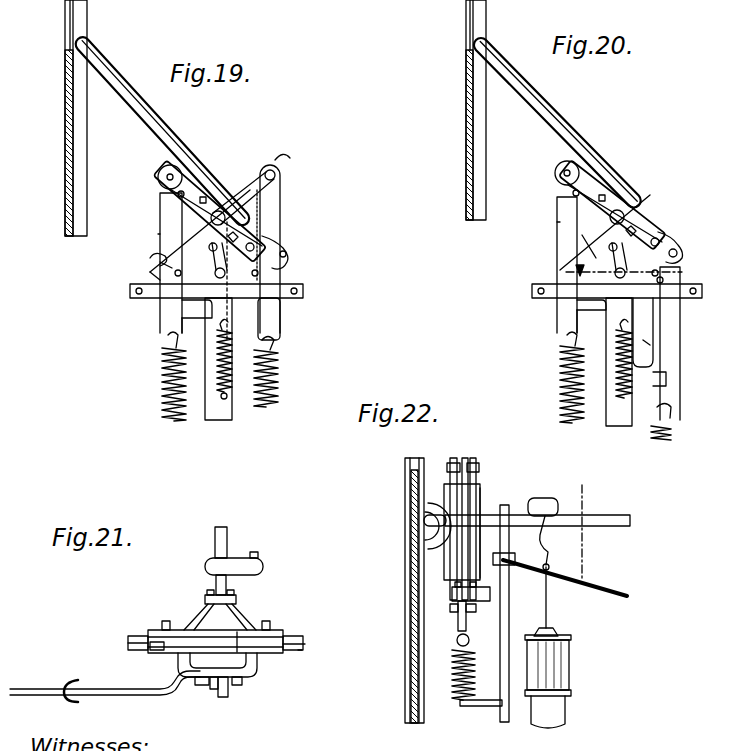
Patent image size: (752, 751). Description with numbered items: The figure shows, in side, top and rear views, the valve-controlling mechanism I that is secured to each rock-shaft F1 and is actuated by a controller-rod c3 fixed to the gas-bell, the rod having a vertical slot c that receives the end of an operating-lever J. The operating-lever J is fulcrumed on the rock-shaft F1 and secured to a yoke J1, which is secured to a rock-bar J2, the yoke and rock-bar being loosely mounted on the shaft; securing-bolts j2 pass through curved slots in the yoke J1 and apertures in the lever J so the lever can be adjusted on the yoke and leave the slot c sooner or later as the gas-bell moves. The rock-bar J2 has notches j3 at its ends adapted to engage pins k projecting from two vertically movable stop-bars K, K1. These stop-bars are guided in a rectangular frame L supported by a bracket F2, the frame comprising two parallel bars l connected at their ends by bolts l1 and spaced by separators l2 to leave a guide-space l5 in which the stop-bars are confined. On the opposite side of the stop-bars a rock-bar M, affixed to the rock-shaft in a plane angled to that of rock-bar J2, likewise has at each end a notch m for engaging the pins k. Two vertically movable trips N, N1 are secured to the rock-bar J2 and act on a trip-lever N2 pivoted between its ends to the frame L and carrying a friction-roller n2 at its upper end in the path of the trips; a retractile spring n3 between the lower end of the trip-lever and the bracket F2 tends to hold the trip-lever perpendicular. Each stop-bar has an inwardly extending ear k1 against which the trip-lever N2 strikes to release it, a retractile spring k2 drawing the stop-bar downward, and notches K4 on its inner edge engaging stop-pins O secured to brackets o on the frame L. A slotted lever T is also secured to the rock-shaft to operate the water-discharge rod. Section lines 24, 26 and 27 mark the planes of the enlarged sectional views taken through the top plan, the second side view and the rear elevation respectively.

In FIG. 19, the vertical slot c is at (65, 12).
In FIG. 20, the vertical slot c is at (464, 110).
In FIG. 19, the controller-rod c3 is at (65, 74).
In FIG. 20, the controller-rod c3 is at (455, 135).
In FIG. 21, the controller-rod c3 is at (76, 682).
In FIG. 22, the controller-rod c3 is at (405, 480).
In FIG. 19, the operating-lever J is at (140, 114).
In FIG. 20, the operating-lever J is at (568, 142).
In FIG. 21, the operating-lever J is at (150, 697).
In FIG. 22, the operating-lever J is at (410, 570).
In FIG. 19, the yoke J1 is at (262, 233).
In FIG. 20, the yoke J1 is at (625, 232).
In FIG. 21, the yoke J1 is at (214, 690).
In FIG. 22, the yoke J1 is at (430, 502).
In FIG. 19, the rock-bar J2 is at (268, 248).
In FIG. 20, the rock-bar J2 is at (630, 215).
In FIG. 21, the rock-bar J2 is at (198, 686).
In FIG. 22, the rock-bar J2 is at (452, 462).
In FIG. 19, the securing-bolts j2 is at (204, 195).
In FIG. 20, the securing-bolts j2 is at (615, 183).
In FIG. 21, the securing-bolts j2 is at (226, 698).
In FIG. 22, the securing-bolts j2 is at (424, 520).
In FIG. 19, the notches j3 is at (290, 258).
In FIG. 20, the notches j3 is at (684, 247).
In FIG. 19, the pins k is at (158, 184).
In FIG. 20, the pins k is at (611, 214).
In FIG. 21, the pins k is at (152, 650).
In FIG. 19, the stop-bar K is at (160, 300).
In FIG. 20, the stop-bar K is at (563, 265).
In FIG. 21, the stop-bar K is at (160, 630).
In FIG. 22, the stop-bar K is at (470, 474).
In FIG. 19, the stop-bar K1 is at (282, 197).
In FIG. 20, the stop-bar K1 is at (651, 343).
In FIG. 21, the stop-bar K1 is at (303, 636).
In FIG. 22, the stop-bar K1 is at (472, 606).
In FIG. 19, the notches K4 is at (150, 272).
In FIG. 20, the notches K4 is at (648, 327).
In FIG. 19, the ear k1 is at (172, 336).
In FIG. 20, the ear k1 is at (640, 358).
In FIG. 19, the retractile spring k2 is at (164, 411).
In FIG. 20, the retractile spring k2 is at (551, 384).
In FIG. 22, the retractile spring k2 is at (460, 704).
In FIG. 19, the rock-bar M is at (250, 176).
In FIG. 21, the rock-bar M is at (198, 626).
In FIG. 22, the rock-bar M is at (480, 484).
In FIG. 19, the notch m is at (280, 160).
In FIG. 19, the rock-shaft F1 is at (219, 210).
In FIG. 20, the rock-shaft F1 is at (639, 206).
In FIG. 21, the rock-shaft F1 is at (228, 534).
In FIG. 22, the rock-shaft F1 is at (620, 514).
In FIG. 19, the bracket F2 is at (224, 421).
In FIG. 20, the bracket F2 is at (619, 371).
In FIG. 21, the bracket F2 is at (240, 599).
In FIG. 22, the bracket F2 is at (494, 707).
In FIG. 19, the trip N is at (210, 238).
In FIG. 20, the trip N is at (579, 253).
In FIG. 20, the trip N1 is at (588, 246).
In FIG. 19, the trip-lever N2 is at (250, 316).
In FIG. 20, the trip-lever N2 is at (674, 342).
In FIG. 19, the friction-roller n2 is at (160, 262).
In FIG. 19, the retractile spring n3 is at (280, 358).
In FIG. 20, the retractile spring n3 is at (644, 388).
In FIG. 19, the stop-pins O is at (207, 273).
In FIG. 20, the stop-pins O is at (601, 288).
In FIG. 19, the brackets o is at (216, 274).
In FIG. 20, the brackets o is at (624, 272).
In FIG. 19, the rectangular frame L is at (303, 295).
In FIG. 20, the rectangular frame L is at (629, 294).
In FIG. 21, the rectangular frame L is at (130, 638).
In FIG. 22, the rectangular frame L is at (460, 604).
In FIG. 19, the parallel bars l is at (200, 308).
In FIG. 20, the parallel bars l is at (563, 330).
In FIG. 21, the parallel bars l is at (303, 640).
In FIG. 22, the parallel bars l is at (455, 592).
In FIG. 19, the bolts l1 is at (134, 291).
In FIG. 20, the bolts l1 is at (598, 296).
In FIG. 21, the bolts l1 is at (300, 650).
In FIG. 21, the separators l2 is at (128, 642).
In FIG. 22, the separators l2 is at (450, 600).
In FIG. 21, the guide-space l5 is at (240, 645).
In FIG. 19, the valve-controlling mechanism I is at (158, 234).
In FIG. 20, the valve-controlling mechanism I is at (548, 223).
In FIG. 21, the valve-controlling mechanism I is at (240, 686).
In FIG. 22, the valve-controlling mechanism I is at (485, 530).
In FIG. 20, the section line 26 is at (617, 274).
In FIG. 21, the lever T is at (265, 566).
In FIG. 22, the lever T is at (545, 500).
In FIG. 21, the section line 24 is at (178, 664).
In FIG. 22, the section line 27 is at (565, 540).